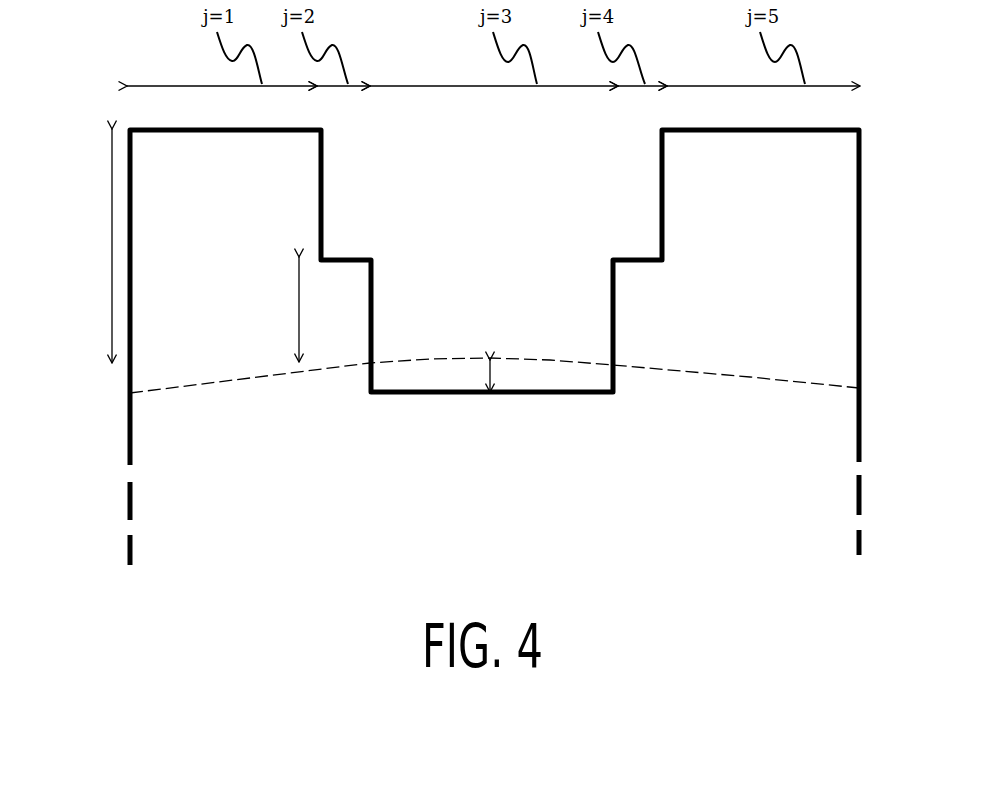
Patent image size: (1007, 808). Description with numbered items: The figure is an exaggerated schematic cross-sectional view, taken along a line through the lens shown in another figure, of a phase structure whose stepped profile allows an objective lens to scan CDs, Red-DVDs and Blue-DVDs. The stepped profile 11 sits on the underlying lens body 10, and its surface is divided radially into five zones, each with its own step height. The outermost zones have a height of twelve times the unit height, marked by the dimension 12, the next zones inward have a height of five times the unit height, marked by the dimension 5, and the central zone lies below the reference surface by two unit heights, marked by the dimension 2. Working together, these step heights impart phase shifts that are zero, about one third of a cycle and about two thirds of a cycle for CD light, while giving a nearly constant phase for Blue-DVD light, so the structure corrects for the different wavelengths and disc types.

The substrate 10 is at (840, 478).
The patterned layer 11 is at (840, 220).
The 12mj height dimension 12 is at (75, 246).
The 5mj height dimension 5 is at (269, 309).
The -2mj depth dimension 2 is at (518, 376).